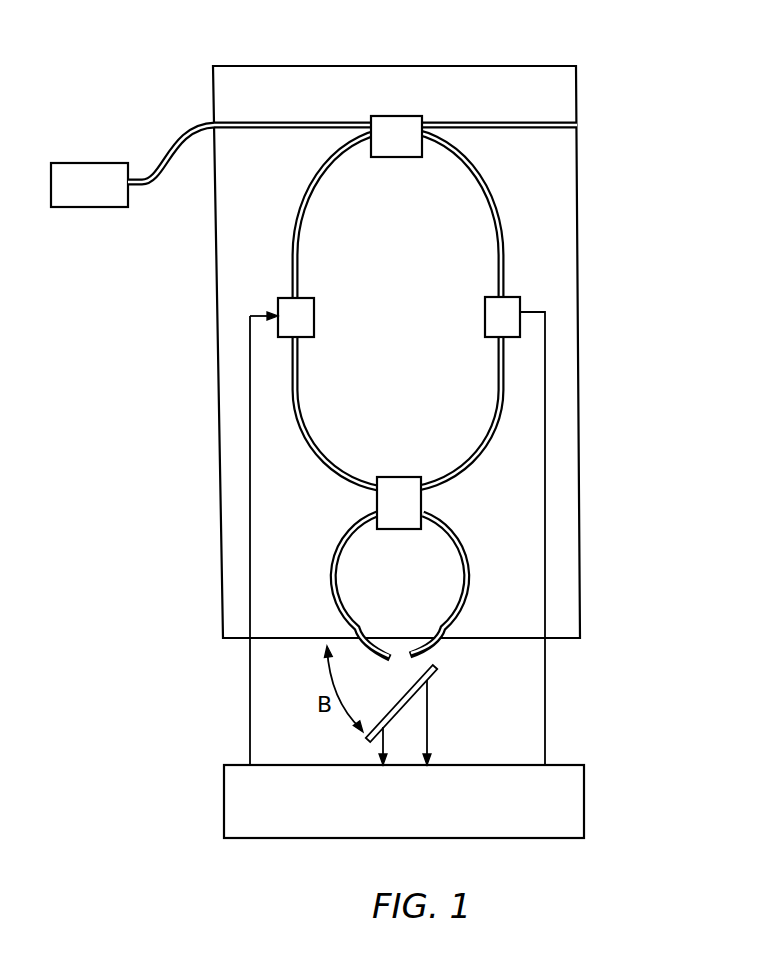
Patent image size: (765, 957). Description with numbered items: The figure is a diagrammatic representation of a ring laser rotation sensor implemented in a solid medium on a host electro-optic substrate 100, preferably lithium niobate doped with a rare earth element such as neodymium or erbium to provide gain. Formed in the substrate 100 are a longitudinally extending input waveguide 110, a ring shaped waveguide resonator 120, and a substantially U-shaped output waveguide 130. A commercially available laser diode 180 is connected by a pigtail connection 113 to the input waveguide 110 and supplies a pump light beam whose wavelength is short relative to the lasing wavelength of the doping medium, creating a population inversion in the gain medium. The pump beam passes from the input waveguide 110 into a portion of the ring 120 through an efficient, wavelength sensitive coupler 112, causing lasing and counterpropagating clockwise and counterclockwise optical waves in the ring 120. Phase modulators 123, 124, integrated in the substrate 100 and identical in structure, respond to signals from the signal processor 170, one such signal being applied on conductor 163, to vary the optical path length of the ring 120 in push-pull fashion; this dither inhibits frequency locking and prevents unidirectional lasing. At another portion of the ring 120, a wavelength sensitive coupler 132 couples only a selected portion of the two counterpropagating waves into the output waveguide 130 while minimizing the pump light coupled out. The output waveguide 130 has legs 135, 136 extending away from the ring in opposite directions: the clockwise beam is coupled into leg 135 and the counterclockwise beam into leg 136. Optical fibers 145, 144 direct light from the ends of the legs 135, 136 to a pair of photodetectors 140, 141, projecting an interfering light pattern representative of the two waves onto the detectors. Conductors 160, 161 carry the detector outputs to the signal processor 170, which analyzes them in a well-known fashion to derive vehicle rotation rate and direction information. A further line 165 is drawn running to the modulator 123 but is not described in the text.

The electro-optic substrate 100 is at (367, 63).
The input waveguide 110 is at (277, 122).
The coupler 112 is at (405, 114).
The pigtail connection 113 is at (170, 160).
The ring shaped waveguide resonator 120 is at (496, 199).
The phase modulator 123 is at (318, 293).
The phase modulator 124 is at (521, 294).
The U-shaped output waveguide 130 is at (446, 536).
The coupler 132 is at (415, 470).
The leg 135 is at (340, 593).
The leg 136 is at (462, 606).
The photodetector 140 is at (440, 666).
The photodetector 141 is at (369, 739).
The optical fiber 144 is at (420, 656).
The optical fiber 145 is at (384, 657).
The conductor 160 is at (429, 741).
The conductor 161 is at (386, 731).
The conductor 163 is at (548, 441).
The coupler input line 165 is at (253, 507).
The signal processor 170 is at (595, 801).
The laser diode 180 is at (87, 191).